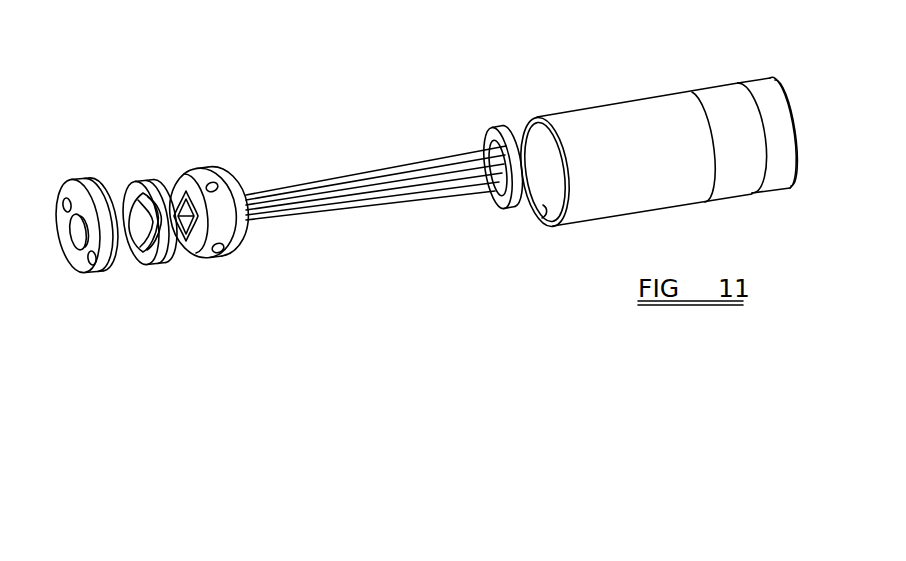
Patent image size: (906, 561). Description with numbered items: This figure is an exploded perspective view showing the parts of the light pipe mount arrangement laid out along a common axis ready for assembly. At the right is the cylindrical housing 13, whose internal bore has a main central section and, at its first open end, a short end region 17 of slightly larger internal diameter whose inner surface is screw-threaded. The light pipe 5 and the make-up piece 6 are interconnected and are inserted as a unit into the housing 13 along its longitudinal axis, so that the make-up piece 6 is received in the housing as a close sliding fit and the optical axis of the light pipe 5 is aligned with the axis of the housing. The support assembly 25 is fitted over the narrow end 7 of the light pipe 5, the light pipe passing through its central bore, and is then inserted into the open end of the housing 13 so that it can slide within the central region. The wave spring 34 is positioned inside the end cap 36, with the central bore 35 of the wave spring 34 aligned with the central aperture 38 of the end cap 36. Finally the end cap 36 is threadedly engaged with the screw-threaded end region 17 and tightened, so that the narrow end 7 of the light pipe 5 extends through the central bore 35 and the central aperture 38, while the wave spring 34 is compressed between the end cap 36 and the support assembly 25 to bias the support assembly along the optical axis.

The light pipe 5 is at (381, 171).
The make-up piece 6 is at (504, 128).
The narrow end 7 is at (241, 177).
The housing 13 is at (600, 110).
The end region 17 is at (542, 216).
The support assembly 25 is at (200, 173).
The wave spring 34 is at (136, 190).
The central bore 35 is at (130, 232).
The end cap 36 is at (95, 190).
The central aperture 38 is at (74, 242).